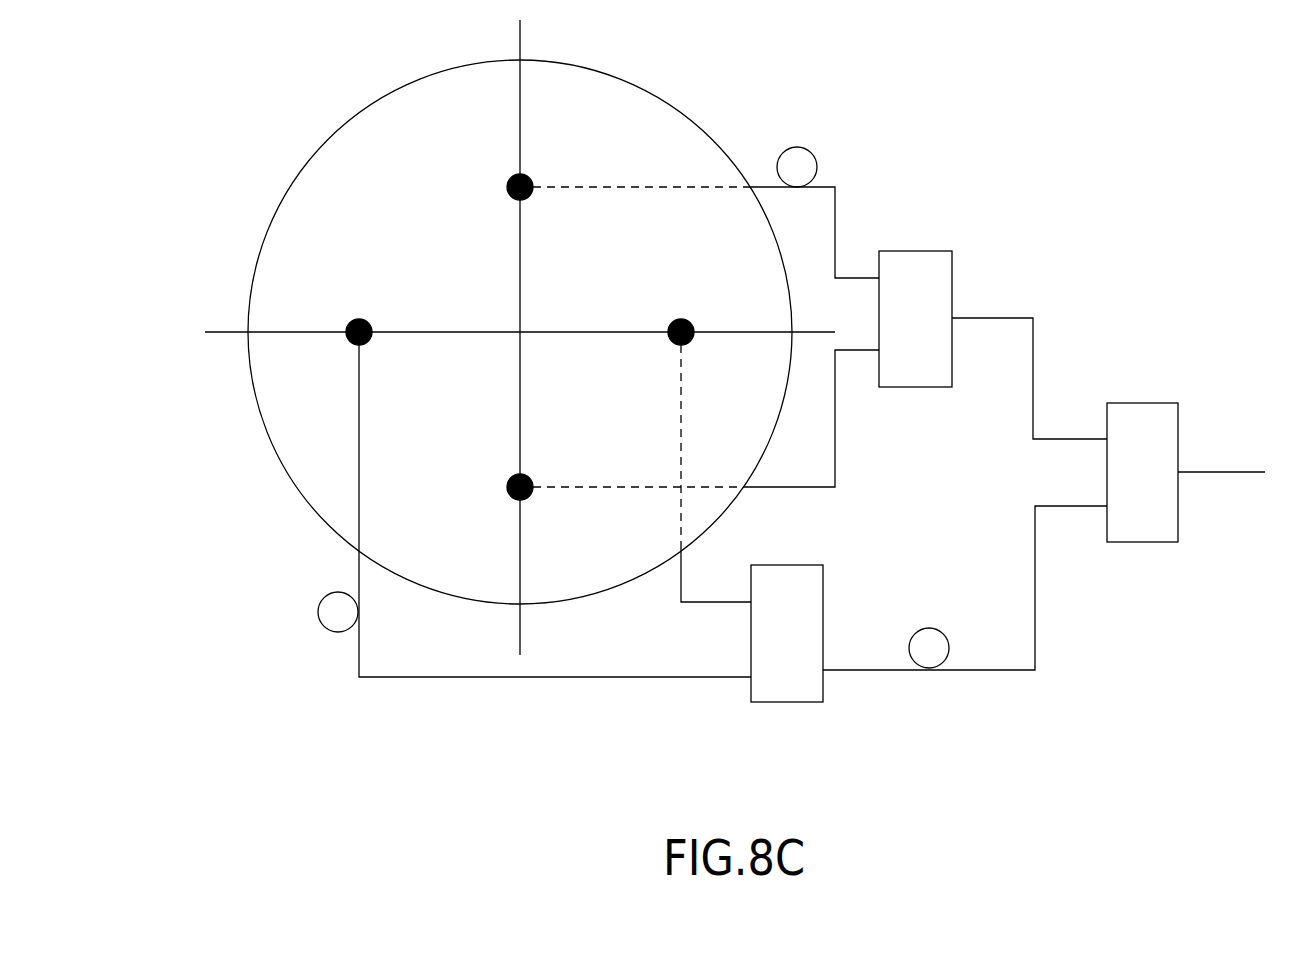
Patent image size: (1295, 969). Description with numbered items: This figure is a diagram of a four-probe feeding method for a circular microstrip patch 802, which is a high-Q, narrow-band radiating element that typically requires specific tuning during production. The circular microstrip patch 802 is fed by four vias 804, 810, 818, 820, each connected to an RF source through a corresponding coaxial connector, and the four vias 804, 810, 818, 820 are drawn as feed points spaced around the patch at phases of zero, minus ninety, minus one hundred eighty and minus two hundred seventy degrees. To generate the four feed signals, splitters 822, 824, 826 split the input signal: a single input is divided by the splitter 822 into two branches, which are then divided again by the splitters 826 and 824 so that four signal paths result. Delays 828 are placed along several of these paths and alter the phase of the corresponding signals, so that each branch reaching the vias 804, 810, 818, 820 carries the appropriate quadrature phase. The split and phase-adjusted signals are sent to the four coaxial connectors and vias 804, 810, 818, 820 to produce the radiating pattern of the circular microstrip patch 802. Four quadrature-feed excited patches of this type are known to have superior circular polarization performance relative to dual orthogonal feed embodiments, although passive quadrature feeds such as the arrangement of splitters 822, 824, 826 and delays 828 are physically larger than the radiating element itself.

The circular microstrip patch 802 is at (328, 142).
The via 804 is at (510, 477).
The via 810 is at (668, 327).
The via 818 is at (510, 177).
The via 820 is at (373, 326).
The splitter 822 is at (1142, 410).
The splitter 824 is at (788, 572).
The splitter 826 is at (915, 258).
The delay 828 is at (800, 153).